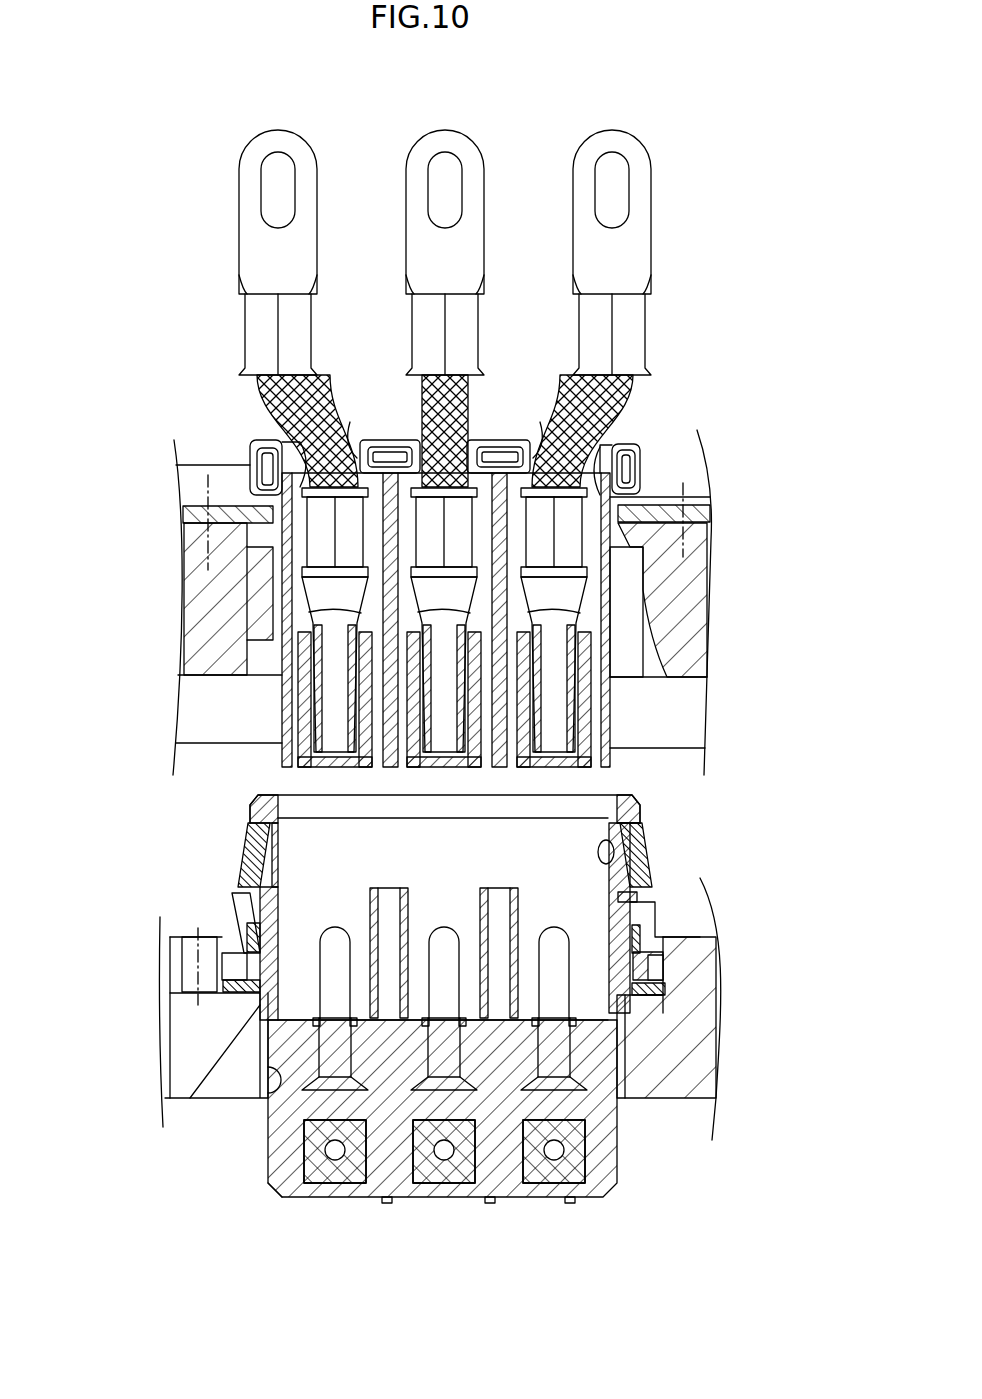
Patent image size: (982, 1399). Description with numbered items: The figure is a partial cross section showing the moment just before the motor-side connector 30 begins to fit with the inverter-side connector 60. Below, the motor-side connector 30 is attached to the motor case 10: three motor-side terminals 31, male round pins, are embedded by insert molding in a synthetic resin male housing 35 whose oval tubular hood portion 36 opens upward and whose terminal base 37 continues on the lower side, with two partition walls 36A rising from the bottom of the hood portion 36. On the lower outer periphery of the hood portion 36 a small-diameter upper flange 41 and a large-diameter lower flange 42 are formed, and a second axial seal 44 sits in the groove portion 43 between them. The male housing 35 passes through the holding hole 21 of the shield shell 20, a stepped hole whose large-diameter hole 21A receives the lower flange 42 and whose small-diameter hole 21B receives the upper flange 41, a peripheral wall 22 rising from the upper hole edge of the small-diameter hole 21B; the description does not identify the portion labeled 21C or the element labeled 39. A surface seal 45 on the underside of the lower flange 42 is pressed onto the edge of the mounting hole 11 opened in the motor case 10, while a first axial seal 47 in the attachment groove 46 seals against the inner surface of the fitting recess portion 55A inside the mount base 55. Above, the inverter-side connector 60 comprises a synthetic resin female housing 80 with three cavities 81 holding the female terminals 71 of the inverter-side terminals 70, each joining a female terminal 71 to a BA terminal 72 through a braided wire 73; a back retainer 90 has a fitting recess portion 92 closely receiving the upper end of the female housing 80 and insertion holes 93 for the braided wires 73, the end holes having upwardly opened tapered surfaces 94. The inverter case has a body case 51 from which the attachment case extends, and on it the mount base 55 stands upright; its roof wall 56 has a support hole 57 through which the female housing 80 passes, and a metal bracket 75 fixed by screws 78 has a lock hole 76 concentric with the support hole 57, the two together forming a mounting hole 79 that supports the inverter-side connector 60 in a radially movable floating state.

The motor case 10 is at (698, 1100).
The mounting hole 11 is at (272, 1080).
The shield shell 20 is at (705, 938).
The holding hole 21 is at (648, 1000).
The large-diameter hole 21A is at (257, 1022).
The small-diameter hole 21B is at (257, 932).
The housing step 21C is at (665, 952).
The peripheral wall 22 is at (240, 898).
The motor-side connector 30 is at (360, 1208).
The motor-side terminal 31 is at (448, 943).
The male housing 35 is at (618, 1058).
The hood portion 36 is at (640, 852).
The partition wall 36A is at (517, 910).
The terminal base 37 is at (270, 1172).
The nut 39 is at (448, 1178).
The upper flange 41 is at (640, 905).
The lower flange 42 is at (662, 970).
The groove portion 43 is at (240, 950).
The second axial seal 44 is at (200, 937).
The surface seal 45 is at (640, 1013).
The attachment groove 46 is at (640, 824).
The first axial seal 47 is at (250, 852).
The body case 51 is at (178, 734).
The mount base 55 is at (183, 552).
The fitting recess portion 55A is at (630, 585).
The roof wall 56 is at (240, 598).
The support hole 57 is at (602, 562).
The inverter-side connector 60 is at (666, 322).
The inverter-side terminal 70 is at (243, 330).
The female terminal 71 is at (312, 705).
The BA terminal 72 is at (239, 200).
The braided wire 73 is at (262, 392).
The bracket 75 is at (198, 512).
The lock hole 76 is at (618, 492).
The screw 78 is at (208, 478).
The mounting hole 79 is at (622, 500).
The female housing 80 is at (283, 742).
The cavity 81 is at (298, 642).
The back retainer 90 is at (640, 447).
The fitting recess portion 92 is at (252, 490).
The insertion hole 93 is at (357, 438).
The tapered surface 94 is at (282, 443).